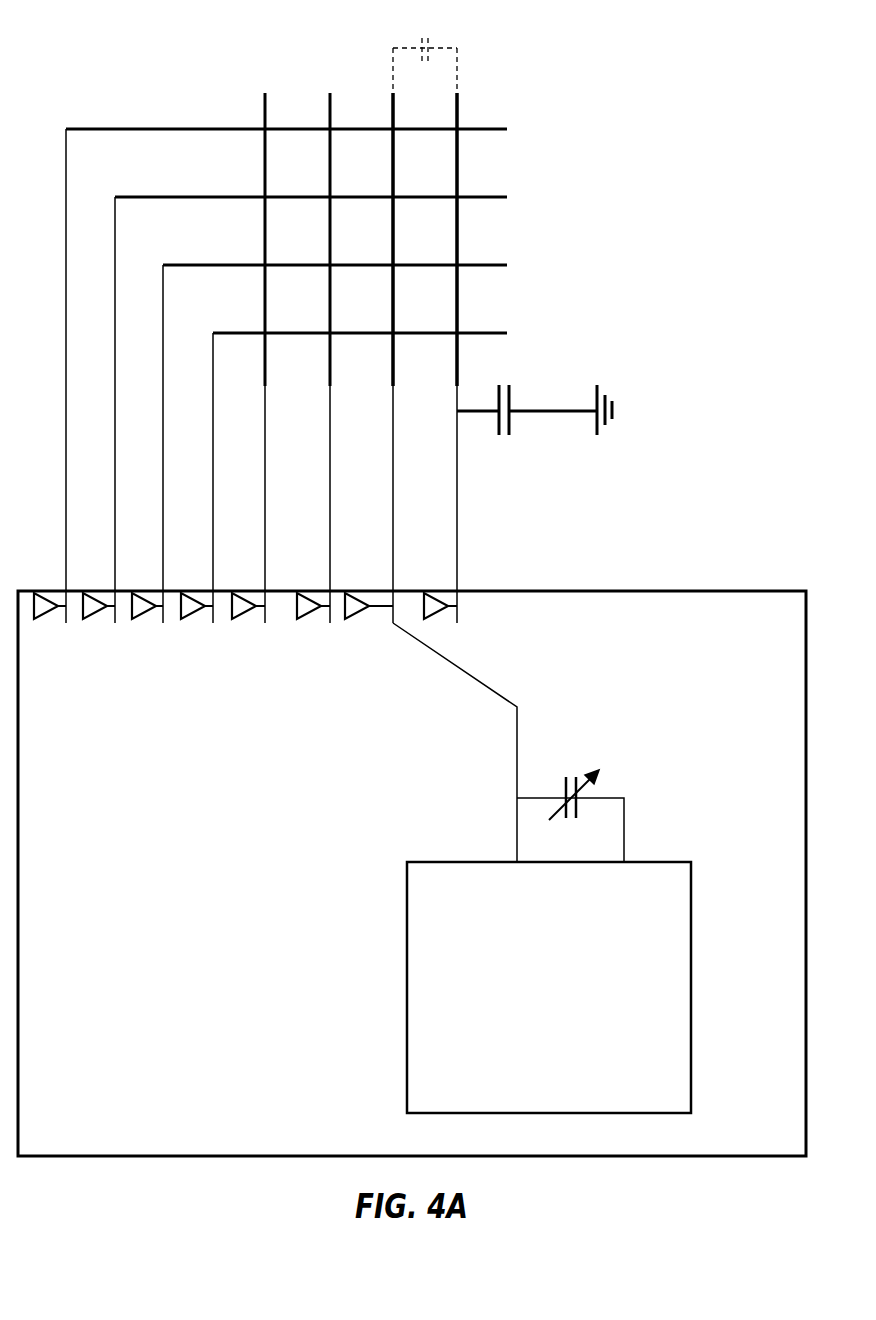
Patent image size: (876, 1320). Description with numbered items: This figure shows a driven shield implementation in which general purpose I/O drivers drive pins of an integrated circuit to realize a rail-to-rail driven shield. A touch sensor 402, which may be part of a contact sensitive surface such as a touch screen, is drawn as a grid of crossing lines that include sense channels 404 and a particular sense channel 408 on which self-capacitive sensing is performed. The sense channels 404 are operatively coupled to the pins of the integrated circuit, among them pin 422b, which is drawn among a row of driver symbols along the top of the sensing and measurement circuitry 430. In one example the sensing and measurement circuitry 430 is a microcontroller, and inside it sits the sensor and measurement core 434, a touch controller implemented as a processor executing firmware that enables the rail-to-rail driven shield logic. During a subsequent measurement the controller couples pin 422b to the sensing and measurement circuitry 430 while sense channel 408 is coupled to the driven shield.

The touch sensor 402 is at (376, 317).
The sense channels 404 is at (393, 93).
The sense channel 408 is at (457, 97).
The pin 422b is at (347, 594).
The sensing and measurement circuitry 430 is at (720, 652).
The sensor and measurement core 434 is at (568, 1042).